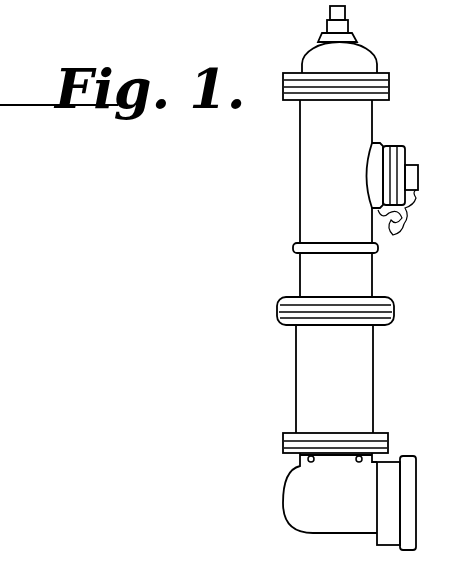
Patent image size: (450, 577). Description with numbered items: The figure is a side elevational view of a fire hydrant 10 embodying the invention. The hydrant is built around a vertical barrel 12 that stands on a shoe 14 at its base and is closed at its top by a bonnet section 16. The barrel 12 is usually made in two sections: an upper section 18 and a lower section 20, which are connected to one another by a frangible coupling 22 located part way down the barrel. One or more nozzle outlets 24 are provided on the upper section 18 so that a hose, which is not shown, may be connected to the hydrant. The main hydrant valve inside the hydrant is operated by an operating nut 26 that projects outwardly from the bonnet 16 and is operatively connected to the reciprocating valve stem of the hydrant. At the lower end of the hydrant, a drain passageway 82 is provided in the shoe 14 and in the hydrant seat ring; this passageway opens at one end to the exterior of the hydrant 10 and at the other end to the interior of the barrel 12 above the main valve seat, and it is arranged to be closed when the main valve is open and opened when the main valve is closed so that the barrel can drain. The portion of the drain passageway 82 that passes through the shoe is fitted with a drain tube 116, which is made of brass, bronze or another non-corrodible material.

The fire hydrant 10 is at (284, 226).
The barrel 12 is at (300, 277).
The shoe 14 is at (287, 491).
The bonnet section 16 is at (377, 60).
The upper section 18 is at (300, 155).
The lower section 20 is at (296, 385).
The frangible coupling 22 is at (279, 312).
The nozzle outlet 24 is at (376, 144).
The operating nut 26 is at (349, 22).
The drain passageway 82 is at (360, 466).
The drain tube 116 is at (449, 331).